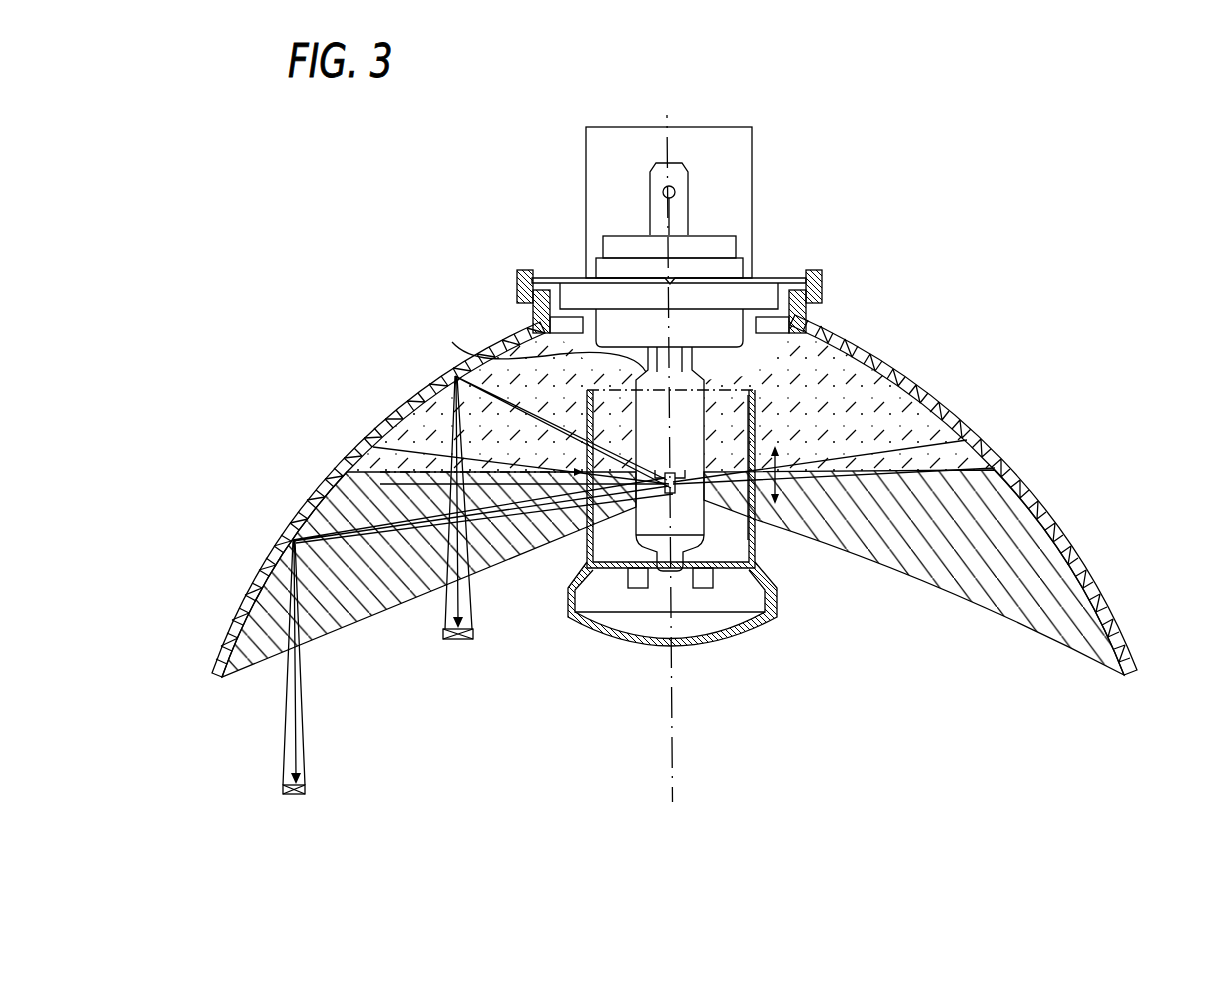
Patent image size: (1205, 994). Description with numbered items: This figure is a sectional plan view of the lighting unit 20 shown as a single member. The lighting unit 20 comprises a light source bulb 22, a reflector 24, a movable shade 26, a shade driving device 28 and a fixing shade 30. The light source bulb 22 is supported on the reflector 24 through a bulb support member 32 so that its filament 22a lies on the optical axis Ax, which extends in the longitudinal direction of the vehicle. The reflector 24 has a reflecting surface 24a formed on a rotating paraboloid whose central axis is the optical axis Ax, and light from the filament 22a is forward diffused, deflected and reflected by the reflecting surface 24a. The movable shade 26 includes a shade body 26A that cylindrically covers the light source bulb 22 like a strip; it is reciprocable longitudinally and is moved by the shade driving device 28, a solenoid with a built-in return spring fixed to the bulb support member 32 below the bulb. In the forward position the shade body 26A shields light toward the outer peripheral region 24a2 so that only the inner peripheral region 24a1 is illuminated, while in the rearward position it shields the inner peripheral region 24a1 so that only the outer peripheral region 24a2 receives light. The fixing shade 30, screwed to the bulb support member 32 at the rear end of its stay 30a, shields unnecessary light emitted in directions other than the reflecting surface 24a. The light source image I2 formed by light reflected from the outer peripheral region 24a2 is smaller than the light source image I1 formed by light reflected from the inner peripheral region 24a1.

The lighting unit 20 is at (896, 296).
The light source bulb 22 is at (723, 435).
The filament 22a is at (675, 476).
The reflector 24 is at (960, 400).
The reflecting surface 24a is at (665, 532).
The inner peripheral region 24a1 is at (407, 417).
The outer peripheral region 24a2 is at (250, 664).
The movable shade 26 is at (686, 513).
The shade body 26A is at (760, 538).
The shade driving device 28 is at (760, 156).
The fixing shade 30 is at (600, 516).
The stay 30a is at (535, 346).
The bulb support member 32 is at (512, 276).
The light source image I1 is at (466, 641).
The light source image I2 is at (301, 795).
The optical axis Ax is at (672, 754).